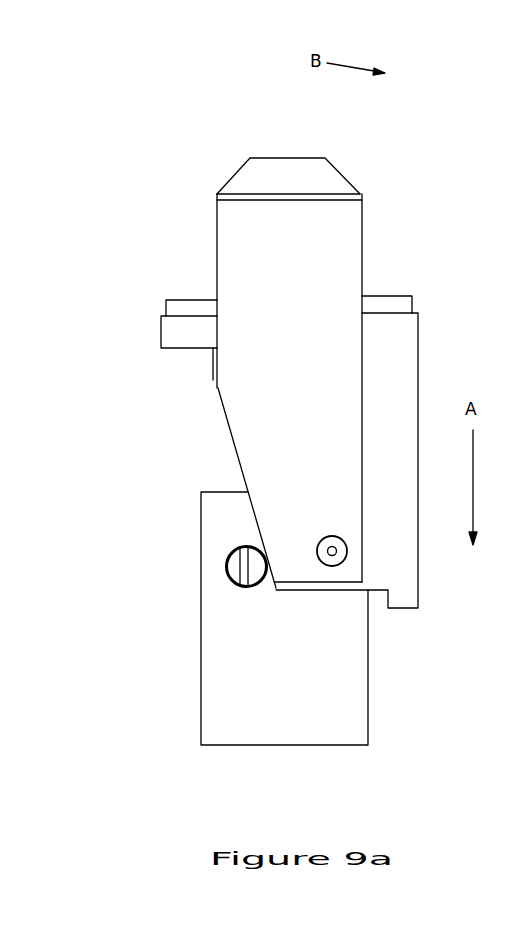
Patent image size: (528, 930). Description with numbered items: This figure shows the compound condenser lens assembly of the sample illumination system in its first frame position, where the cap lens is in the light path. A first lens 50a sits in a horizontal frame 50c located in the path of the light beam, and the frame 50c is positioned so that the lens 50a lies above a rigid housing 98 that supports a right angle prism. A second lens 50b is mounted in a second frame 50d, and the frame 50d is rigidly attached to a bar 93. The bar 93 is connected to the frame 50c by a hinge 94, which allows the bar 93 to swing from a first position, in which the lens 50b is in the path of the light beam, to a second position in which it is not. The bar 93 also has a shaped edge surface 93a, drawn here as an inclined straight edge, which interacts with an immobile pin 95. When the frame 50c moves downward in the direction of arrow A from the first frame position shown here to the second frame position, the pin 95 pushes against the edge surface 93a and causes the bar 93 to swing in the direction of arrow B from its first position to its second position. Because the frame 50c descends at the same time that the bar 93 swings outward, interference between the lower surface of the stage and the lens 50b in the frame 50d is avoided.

The first lens 50a is at (197, 297).
The second lens 50b is at (268, 160).
The horizontal frame 50c is at (377, 333).
The second frame 50d is at (217, 199).
The bar 93 is at (245, 253).
The shaped edge surface 93a is at (260, 515).
The hinge 94 is at (317, 561).
The immobile pin 95 is at (225, 578).
The rigid housing 98 is at (277, 715).